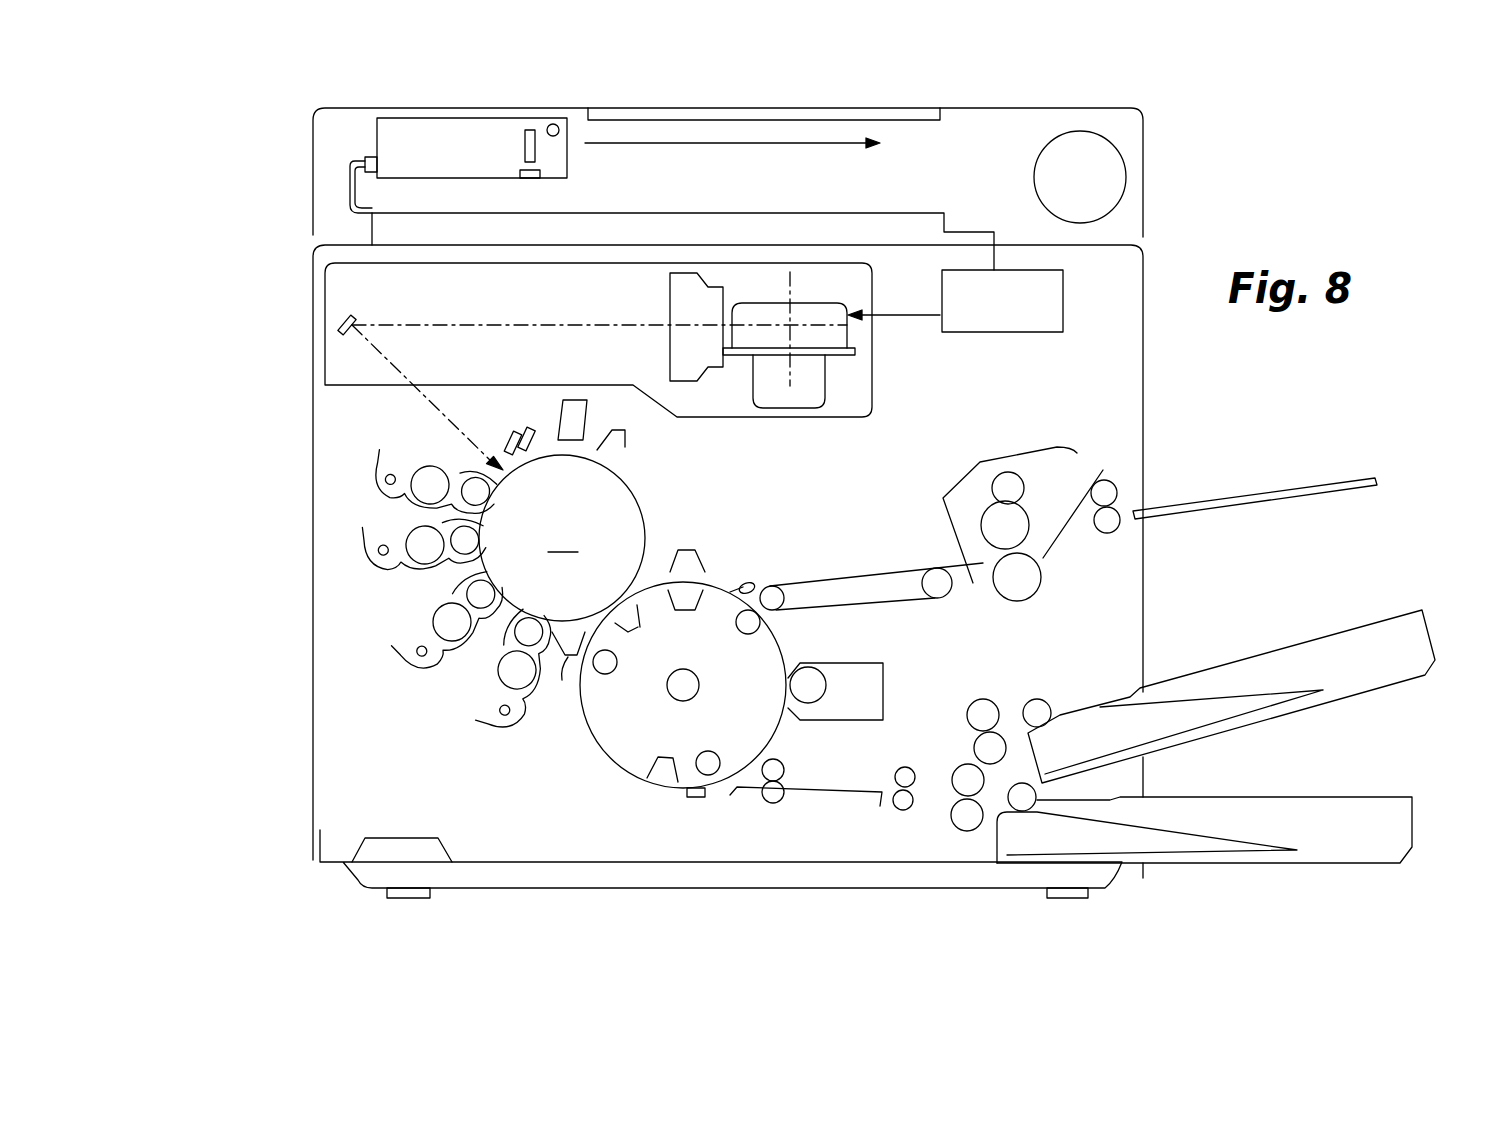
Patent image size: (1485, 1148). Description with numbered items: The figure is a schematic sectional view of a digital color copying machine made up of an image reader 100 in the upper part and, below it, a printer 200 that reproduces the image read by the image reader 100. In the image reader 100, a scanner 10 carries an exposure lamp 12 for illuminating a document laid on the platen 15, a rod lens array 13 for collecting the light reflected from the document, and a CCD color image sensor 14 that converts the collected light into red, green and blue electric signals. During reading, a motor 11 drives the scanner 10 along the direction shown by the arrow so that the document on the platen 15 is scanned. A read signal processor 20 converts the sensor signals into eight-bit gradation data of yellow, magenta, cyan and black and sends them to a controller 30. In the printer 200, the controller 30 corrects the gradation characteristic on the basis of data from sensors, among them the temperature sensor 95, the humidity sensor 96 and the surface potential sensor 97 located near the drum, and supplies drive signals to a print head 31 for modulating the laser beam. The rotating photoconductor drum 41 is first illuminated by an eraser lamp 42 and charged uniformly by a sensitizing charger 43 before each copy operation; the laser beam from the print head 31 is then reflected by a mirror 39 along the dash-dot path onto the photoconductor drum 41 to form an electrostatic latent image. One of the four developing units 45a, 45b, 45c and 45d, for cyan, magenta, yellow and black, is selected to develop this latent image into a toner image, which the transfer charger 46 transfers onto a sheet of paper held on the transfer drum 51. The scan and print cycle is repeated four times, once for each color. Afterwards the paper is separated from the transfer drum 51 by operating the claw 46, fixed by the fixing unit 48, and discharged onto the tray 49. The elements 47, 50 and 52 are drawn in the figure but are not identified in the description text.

The image reader 100 is at (310, 148).
The scanner 10 is at (390, 104).
The motor 11 is at (1128, 171).
The exposure lamp 12 is at (552, 123).
The rod lens array 13 is at (525, 146).
The CCD color image sensor 14 is at (531, 178).
The platen 15 is at (815, 108).
The read signal processor 20 is at (372, 230).
The printer 200 is at (310, 395).
The controller 30 is at (1064, 298).
The print head 31 is at (851, 330).
The mirror 39 is at (352, 318).
The photoconductor drum 41 is at (562, 538).
The eraser lamp 42 is at (627, 440).
The sensitizing charger 43 is at (575, 400).
The developing unit 45a is at (376, 460).
The developing unit 45b is at (365, 572).
The developing unit 45c is at (390, 648).
The developing unit 45d is at (458, 705).
The transfer charger / claw 46 is at (633, 633).
The transfer charger 47 is at (748, 580).
The fixing unit 48 is at (980, 462).
The tray 49 is at (1340, 478).
The paper cassette 50 is at (1320, 712).
The transfer drum 51 is at (630, 777).
The transfer drum cleaner 52 is at (696, 800).
The temperature sensor 95 is at (505, 440).
The humidity sensor 96 is at (524, 430).
The surface potential sensor 97 is at (566, 674).